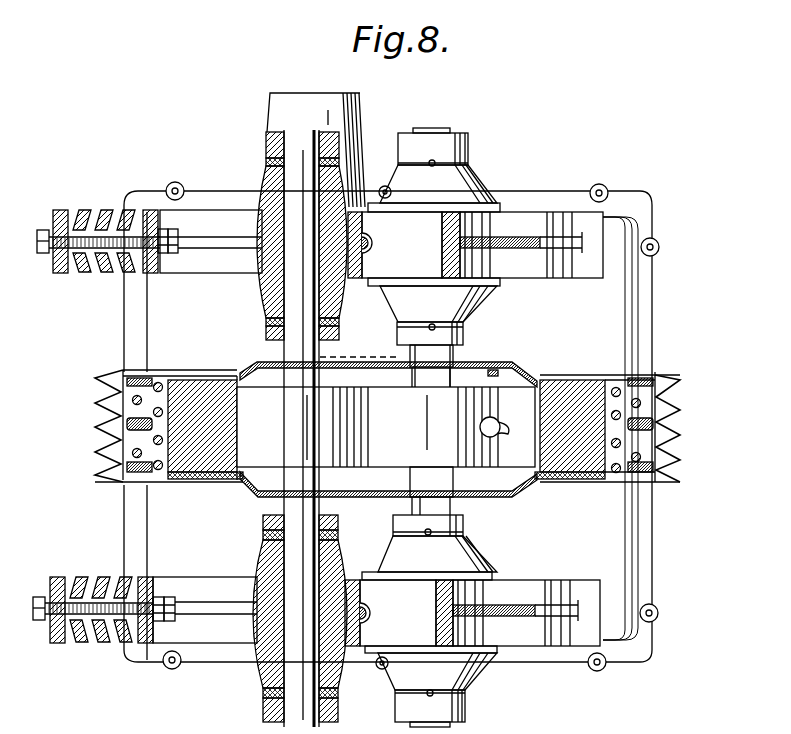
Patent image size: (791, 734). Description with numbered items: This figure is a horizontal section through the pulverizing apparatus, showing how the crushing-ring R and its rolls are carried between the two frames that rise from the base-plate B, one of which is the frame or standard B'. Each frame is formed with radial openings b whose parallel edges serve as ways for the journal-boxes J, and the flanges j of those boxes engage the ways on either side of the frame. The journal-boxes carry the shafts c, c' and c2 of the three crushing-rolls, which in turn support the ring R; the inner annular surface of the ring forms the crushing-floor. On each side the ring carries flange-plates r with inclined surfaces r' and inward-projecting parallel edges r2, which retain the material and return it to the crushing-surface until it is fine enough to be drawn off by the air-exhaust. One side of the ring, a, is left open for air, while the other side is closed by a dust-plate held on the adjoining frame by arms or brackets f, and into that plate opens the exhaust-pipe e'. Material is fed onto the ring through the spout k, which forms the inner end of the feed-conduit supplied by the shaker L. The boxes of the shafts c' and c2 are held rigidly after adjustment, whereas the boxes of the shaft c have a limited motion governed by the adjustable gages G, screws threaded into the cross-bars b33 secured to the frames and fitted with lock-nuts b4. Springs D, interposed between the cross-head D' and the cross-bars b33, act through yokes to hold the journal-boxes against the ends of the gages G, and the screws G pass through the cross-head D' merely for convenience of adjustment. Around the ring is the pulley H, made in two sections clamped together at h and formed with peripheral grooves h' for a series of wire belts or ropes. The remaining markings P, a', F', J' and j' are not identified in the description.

The base-plate B is at (391, 426).
The frame plate P is at (105, 336).
The pulley H is at (655, 438).
The clamping points of pulley sections h is at (383, 437).
The peripheral grooves h' is at (678, 381).
The open side of ring a is at (388, 445).
The casing bracket a' is at (263, 341).
The flange-plates r is at (411, 410).
The inclined surfaces r' is at (549, 361).
The parallel edges r2 is at (548, 344).
The pad F' is at (513, 345).
The arms or brackets f is at (465, 339).
The crushing-ring R is at (590, 478).
The shaft of fixed crushing-roll c' is at (386, 427).
The shaft of crushing-roll c2 is at (458, 115).
The spout k is at (499, 436).
The shaft of yielding crushing-roll c is at (300, 428).
The exhaust-pipe e' is at (316, 204).
The journal-boxes J is at (440, 405).
The bevel hub J' is at (364, 250).
The shaker L is at (370, 242).
The frame or standard B' is at (528, 429).
The flanges of journal-boxes j is at (444, 597).
The journal j' is at (244, 553).
The radial openings b is at (207, 426).
The lock-nuts b4 is at (175, 417).
The adjustable gages G is at (127, 429).
The cross-head D' is at (45, 438).
The springs D is at (102, 438).
The cross-bars b33 is at (150, 273).